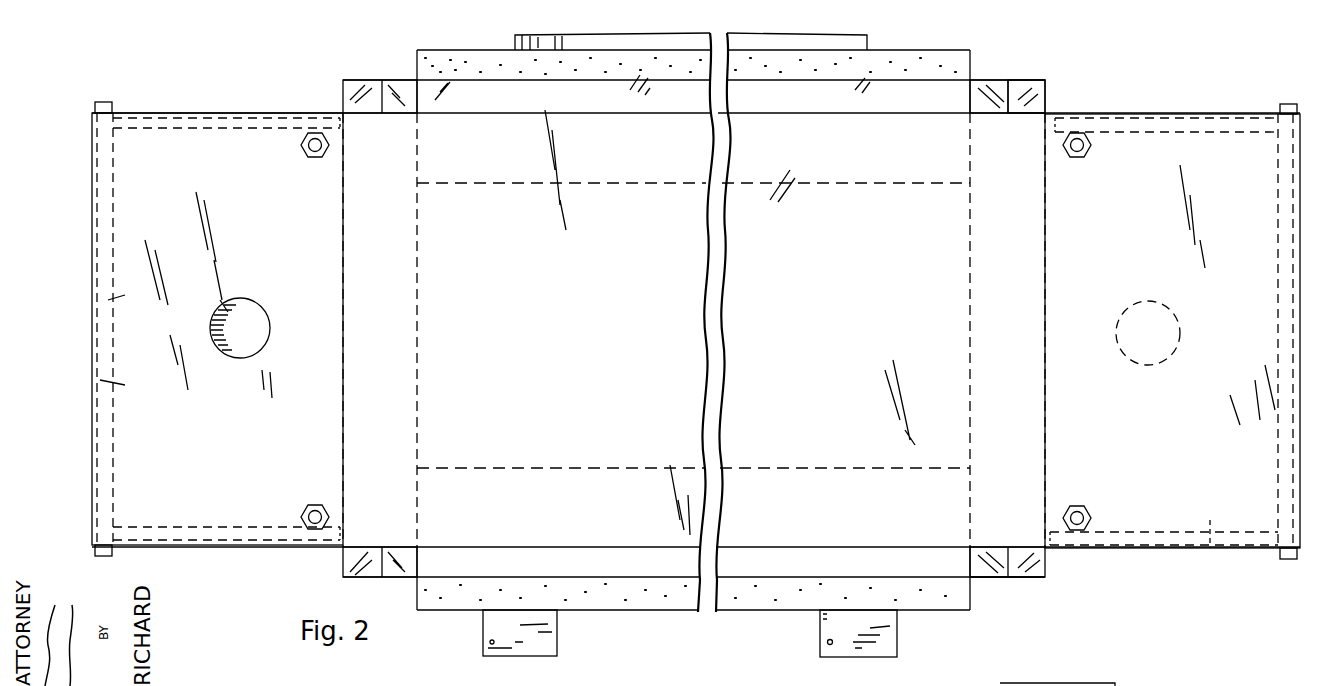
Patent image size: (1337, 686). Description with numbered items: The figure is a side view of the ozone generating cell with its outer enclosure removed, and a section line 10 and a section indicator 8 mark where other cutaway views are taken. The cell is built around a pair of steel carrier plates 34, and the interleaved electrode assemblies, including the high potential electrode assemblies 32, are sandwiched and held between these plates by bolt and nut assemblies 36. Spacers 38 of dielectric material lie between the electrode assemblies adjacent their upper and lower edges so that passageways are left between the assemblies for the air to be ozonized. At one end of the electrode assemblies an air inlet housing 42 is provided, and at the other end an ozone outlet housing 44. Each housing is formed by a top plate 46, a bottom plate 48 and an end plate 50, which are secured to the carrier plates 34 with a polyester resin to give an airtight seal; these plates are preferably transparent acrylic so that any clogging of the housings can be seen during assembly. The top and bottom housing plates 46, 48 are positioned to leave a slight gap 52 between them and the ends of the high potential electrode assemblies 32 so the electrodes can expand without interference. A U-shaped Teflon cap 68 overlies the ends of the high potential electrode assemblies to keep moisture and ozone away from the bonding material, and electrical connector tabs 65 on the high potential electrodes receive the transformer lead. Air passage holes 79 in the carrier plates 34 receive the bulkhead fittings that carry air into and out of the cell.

The section line indicator 8 is at (1150, 685).
The section line 10 is at (892, 237).
The high potential electrode assembly 32 is at (999, 597).
The steel carrier plate 34 is at (552, 380).
The bolt and nut assembly 36 is at (313, 530).
The spacer 38 is at (420, 62).
The air inlet housing 42 is at (128, 262).
The ozone outlet housing 44 is at (1210, 550).
The top housing plate 46 is at (212, 535).
The bottom housing plate 48 is at (196, 120).
The end plate 50 is at (1280, 436).
The gap 52 is at (342, 104).
The electrical connector tab 65 is at (538, 645).
The cap 68 is at (1030, 95).
The air passage hole 79 is at (244, 358).